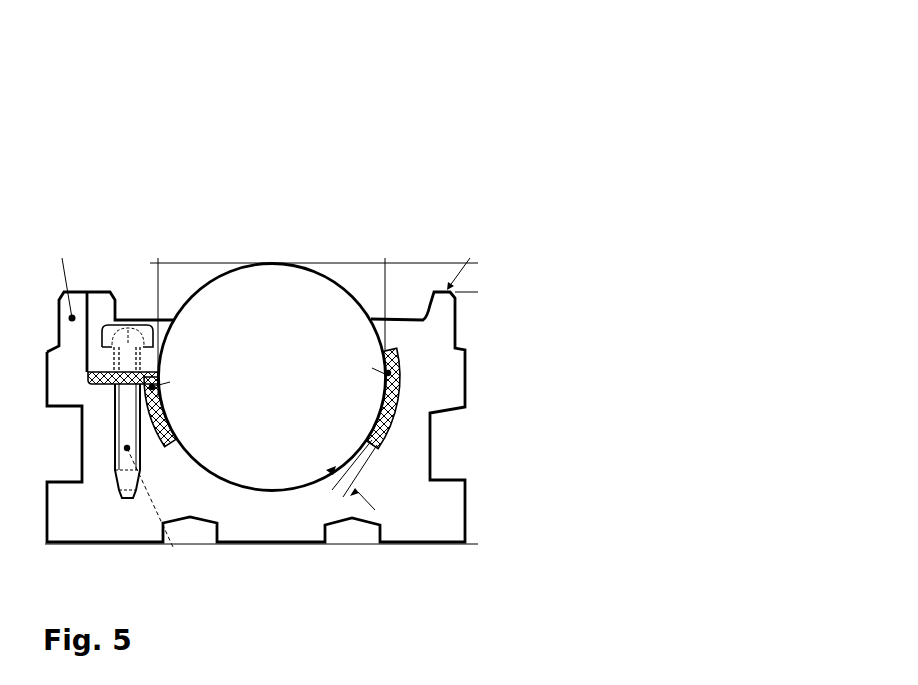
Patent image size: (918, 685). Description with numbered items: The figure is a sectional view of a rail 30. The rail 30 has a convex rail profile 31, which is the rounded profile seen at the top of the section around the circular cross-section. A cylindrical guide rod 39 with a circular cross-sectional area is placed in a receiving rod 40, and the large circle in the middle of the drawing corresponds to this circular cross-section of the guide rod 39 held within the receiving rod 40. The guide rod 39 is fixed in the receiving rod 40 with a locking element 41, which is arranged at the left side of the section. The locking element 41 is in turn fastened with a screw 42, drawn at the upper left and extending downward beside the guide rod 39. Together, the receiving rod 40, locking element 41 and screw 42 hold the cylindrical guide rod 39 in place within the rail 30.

The rail 30 is at (200, 213).
The convex rail profile 31 is at (330, 262).
The cylindrical guide rod 39 is at (326, 331).
The receiving rod 40 is at (400, 455).
The locking element 41 is at (100, 310).
The screw 42 is at (128, 347).